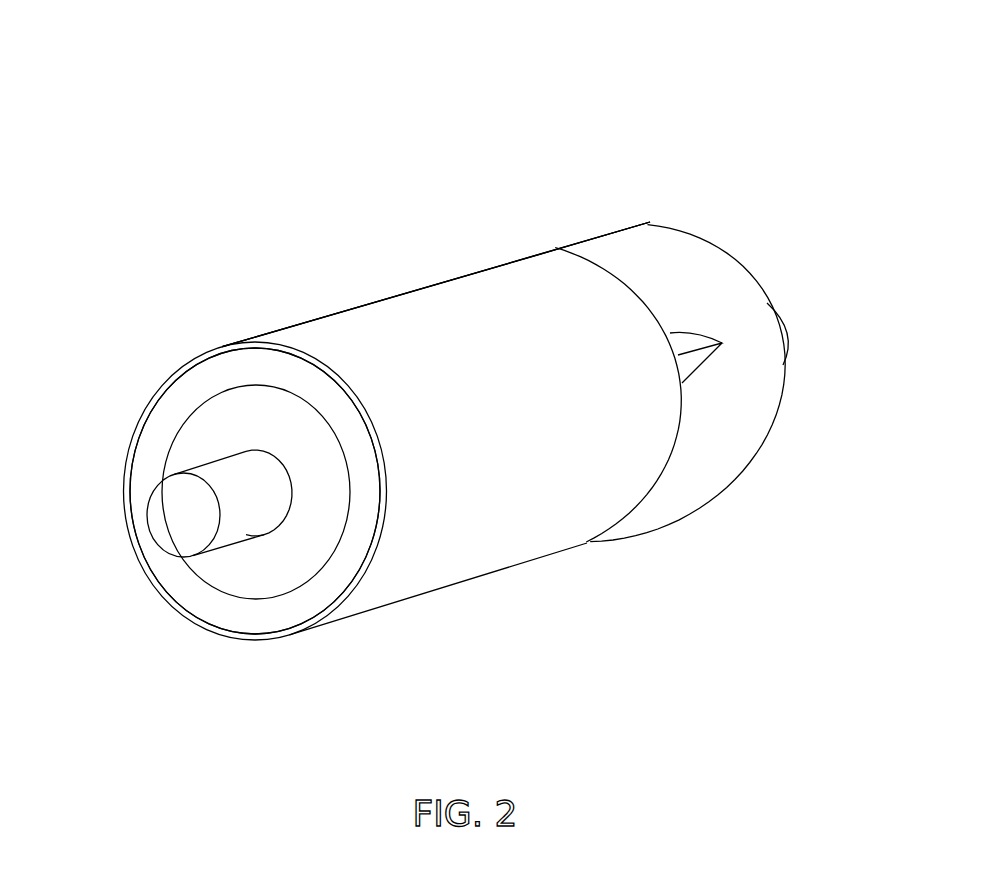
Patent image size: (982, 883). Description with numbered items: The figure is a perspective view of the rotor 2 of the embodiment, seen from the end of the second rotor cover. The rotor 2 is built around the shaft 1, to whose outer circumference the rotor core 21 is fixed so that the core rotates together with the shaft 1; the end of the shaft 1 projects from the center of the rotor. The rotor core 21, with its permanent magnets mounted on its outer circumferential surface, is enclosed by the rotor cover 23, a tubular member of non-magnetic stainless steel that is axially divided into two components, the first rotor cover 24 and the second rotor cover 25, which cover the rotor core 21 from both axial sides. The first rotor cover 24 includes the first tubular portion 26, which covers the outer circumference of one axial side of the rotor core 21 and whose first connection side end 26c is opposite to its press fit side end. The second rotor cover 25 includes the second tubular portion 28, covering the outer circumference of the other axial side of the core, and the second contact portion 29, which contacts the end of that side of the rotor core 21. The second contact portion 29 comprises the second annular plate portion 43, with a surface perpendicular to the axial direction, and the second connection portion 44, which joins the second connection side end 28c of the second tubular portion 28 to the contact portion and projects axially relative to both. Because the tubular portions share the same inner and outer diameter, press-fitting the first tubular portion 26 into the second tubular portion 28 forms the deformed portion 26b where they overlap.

The rotor 2 is at (628, 84).
The shaft 1 is at (170, 520).
The rotor core 21 is at (277, 573).
The rotor cover 23 is at (607, 172).
The first rotor cover 24 is at (613, 250).
The second rotor cover 25 is at (530, 273).
The first tubular portion 26 is at (693, 250).
The deformed portion 26b is at (697, 367).
The first connection side end 26c is at (738, 257).
The second tubular portion 28 is at (320, 332).
The second connection side end 28c is at (253, 335).
The second contact portion 29 is at (207, 372).
The second annular plate portion 43 is at (147, 467).
The second connection portion 44 is at (141, 415).